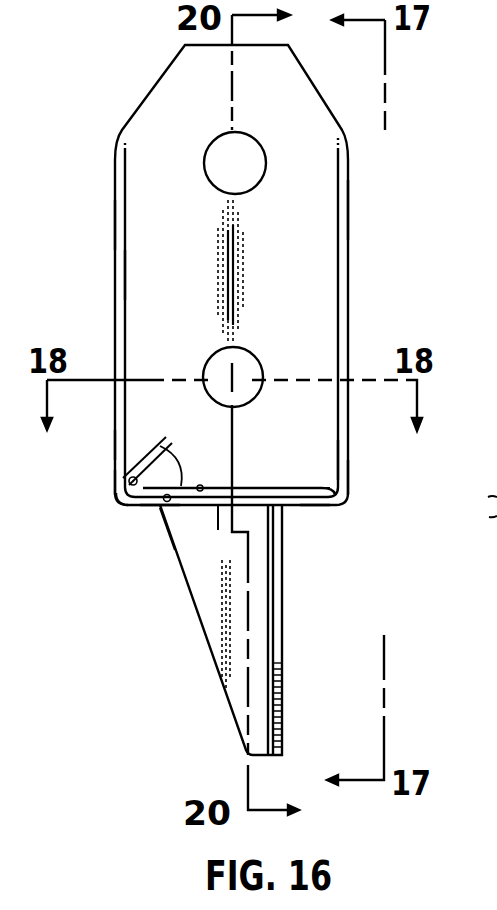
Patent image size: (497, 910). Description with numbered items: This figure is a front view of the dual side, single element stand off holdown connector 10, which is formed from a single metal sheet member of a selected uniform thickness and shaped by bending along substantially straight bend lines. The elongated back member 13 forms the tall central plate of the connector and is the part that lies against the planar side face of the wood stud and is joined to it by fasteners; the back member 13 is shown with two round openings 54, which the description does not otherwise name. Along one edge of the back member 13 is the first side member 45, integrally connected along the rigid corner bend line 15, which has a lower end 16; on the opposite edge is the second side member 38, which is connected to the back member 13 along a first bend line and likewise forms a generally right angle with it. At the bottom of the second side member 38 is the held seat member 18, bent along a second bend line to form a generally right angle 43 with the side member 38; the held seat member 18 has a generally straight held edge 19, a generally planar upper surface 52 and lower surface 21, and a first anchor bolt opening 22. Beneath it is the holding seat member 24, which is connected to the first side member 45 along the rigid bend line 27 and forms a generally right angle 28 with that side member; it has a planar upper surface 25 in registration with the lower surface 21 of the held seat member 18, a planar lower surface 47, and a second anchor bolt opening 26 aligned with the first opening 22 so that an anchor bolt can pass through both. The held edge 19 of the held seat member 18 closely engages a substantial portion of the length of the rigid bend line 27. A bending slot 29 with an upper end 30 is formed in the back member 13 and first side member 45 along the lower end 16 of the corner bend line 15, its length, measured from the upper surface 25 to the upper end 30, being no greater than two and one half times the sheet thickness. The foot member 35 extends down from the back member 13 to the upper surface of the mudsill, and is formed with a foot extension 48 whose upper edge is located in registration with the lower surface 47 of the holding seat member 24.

The dual side, single element stand off holdown connector 10 is at (357, 250).
The elongated back member 13 is at (325, 239).
The mounting holes 54 is at (248, 143).
The second side member 38 is at (350, 208).
The first side member 45 is at (114, 220).
The rigid corner bend line 15 is at (127, 276).
The lower end of the rigid corner bend line 16 is at (150, 452).
The generally 90° angle 28 is at (130, 441).
The upper end of the bending slot 30 is at (152, 462).
The bending slot 29 is at (183, 486).
The generally 90° angle 43 is at (301, 472).
The first anchor bolt opening 22 is at (240, 482).
The second anchor bolt opening 26 is at (245, 490).
The held seat member 18 is at (314, 475).
The upper surface of the held seat member 52 is at (328, 484).
The generally straight held edge 19 is at (122, 493).
The rigid bend line 27 is at (122, 503).
The lower surface of the held seat member 21 is at (158, 512).
The upper surface of the holding seat member 25 is at (166, 508).
The lower surface of the holding seat member 47 is at (168, 531).
The holding seat member 24 is at (216, 527).
The foot member 35 is at (296, 600).
The foot extension 48 is at (280, 649).